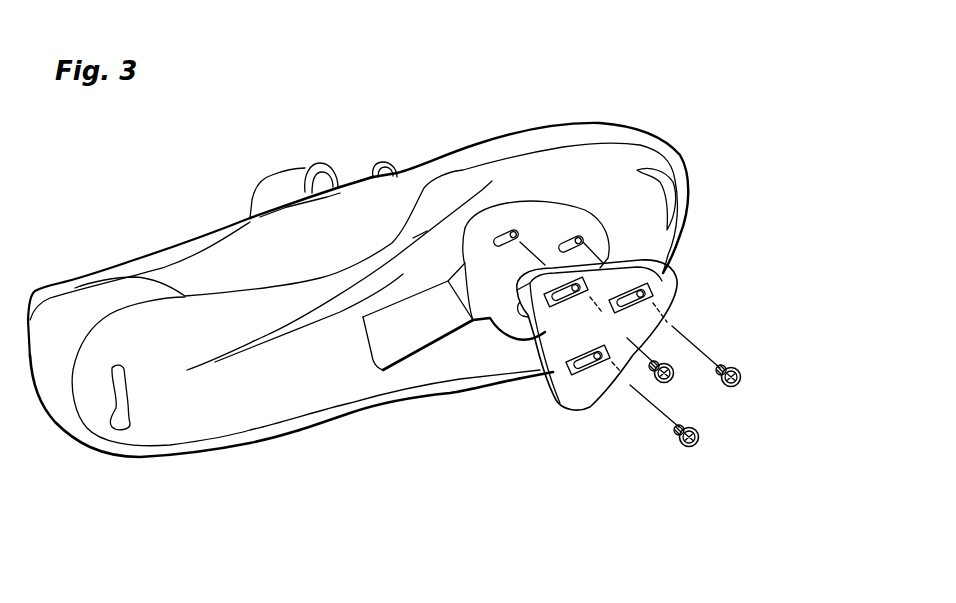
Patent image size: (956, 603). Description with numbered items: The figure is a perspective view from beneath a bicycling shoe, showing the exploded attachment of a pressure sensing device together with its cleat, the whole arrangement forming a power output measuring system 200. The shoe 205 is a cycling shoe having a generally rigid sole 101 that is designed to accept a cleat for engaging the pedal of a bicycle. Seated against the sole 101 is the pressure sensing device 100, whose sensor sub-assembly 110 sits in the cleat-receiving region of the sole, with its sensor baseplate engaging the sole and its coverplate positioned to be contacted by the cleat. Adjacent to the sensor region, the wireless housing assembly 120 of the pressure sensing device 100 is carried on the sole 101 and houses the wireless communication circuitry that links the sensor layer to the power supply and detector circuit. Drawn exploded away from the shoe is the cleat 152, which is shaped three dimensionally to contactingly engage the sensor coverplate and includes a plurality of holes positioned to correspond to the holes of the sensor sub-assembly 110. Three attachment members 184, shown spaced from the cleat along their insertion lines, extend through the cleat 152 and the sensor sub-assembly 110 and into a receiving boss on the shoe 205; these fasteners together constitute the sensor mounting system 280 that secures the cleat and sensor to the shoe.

The pressure sensing device 100 is at (497, 345).
The sole 101 is at (212, 403).
The sensor sub-assembly 110 is at (545, 228).
The wireless housing assembly 120 is at (418, 328).
The cleat 152 is at (670, 293).
The attachment member 184 is at (692, 448).
The power output measuring system 200 is at (697, 147).
The shoe 205 is at (473, 162).
The sensor mounting system 280 is at (699, 425).